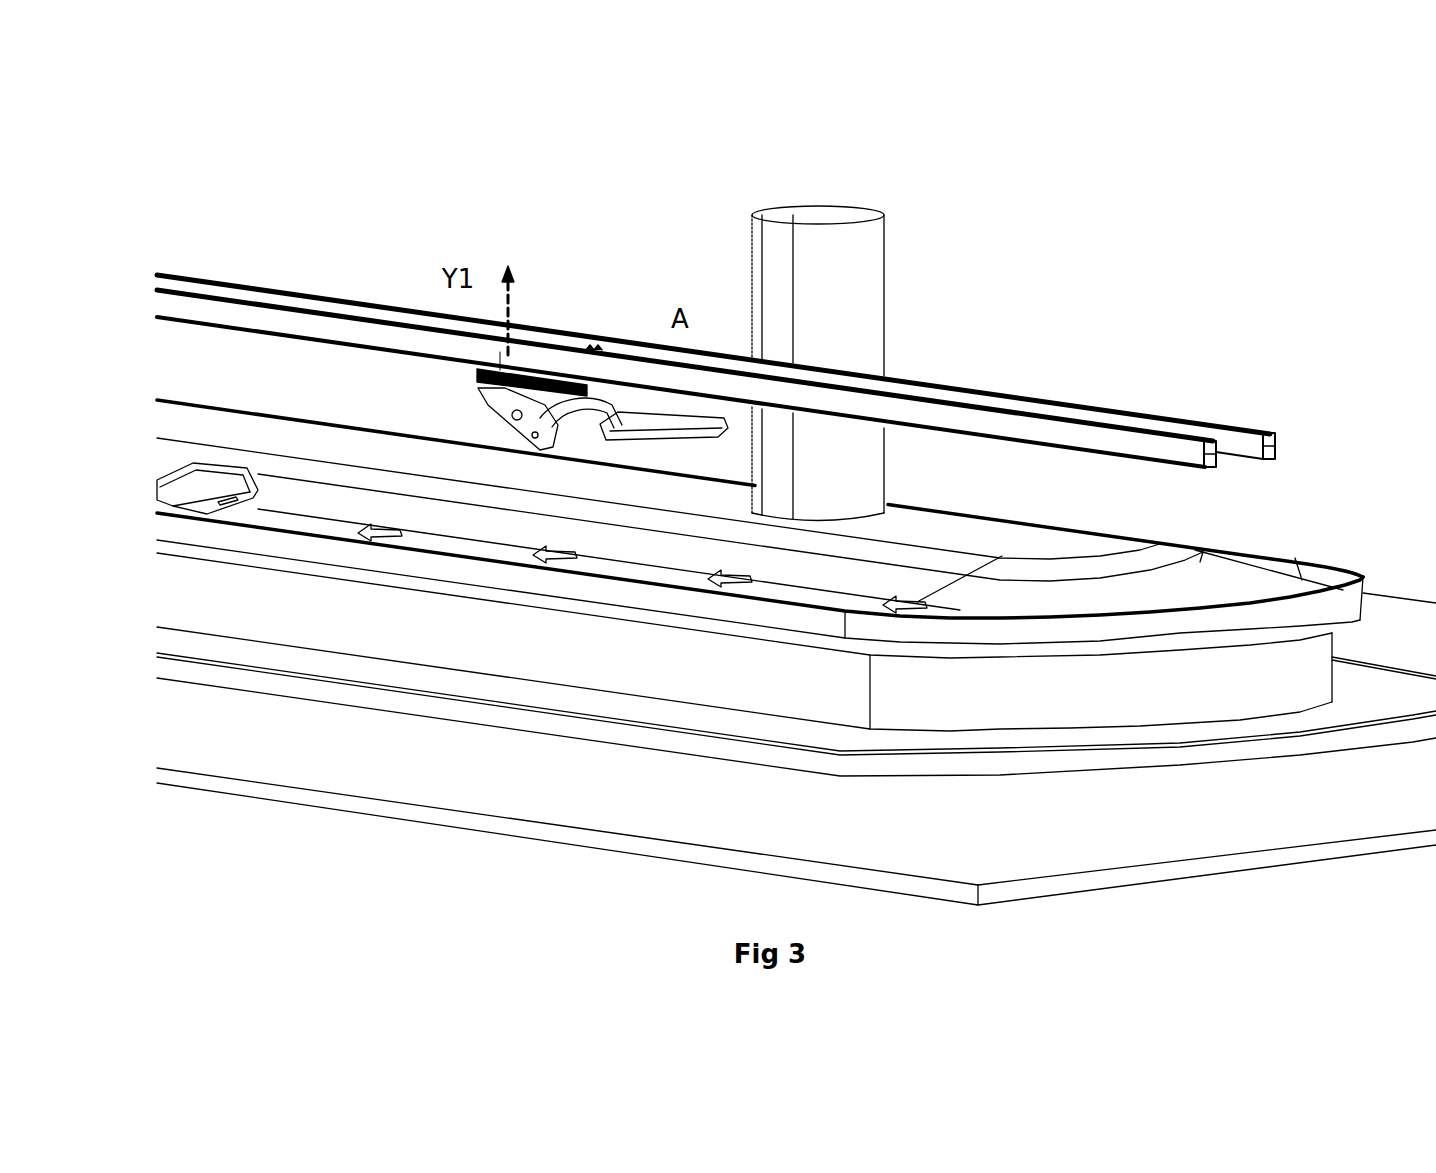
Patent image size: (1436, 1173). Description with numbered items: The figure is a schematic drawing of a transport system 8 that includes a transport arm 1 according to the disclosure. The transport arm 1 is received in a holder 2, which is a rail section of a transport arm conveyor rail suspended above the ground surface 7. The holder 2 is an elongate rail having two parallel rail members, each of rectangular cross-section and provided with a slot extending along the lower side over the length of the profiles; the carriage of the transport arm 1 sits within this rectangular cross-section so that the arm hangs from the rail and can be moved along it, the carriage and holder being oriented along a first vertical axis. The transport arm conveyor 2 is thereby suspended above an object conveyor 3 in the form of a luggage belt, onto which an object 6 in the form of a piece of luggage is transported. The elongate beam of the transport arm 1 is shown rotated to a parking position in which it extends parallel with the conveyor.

The transport arm 1 is at (450, 401).
The holder 2 is at (1193, 392).
The object conveyor 3 is at (1268, 570).
The object 6 is at (208, 455).
The ground surface 7 is at (288, 764).
The transport system 8 is at (1058, 278).